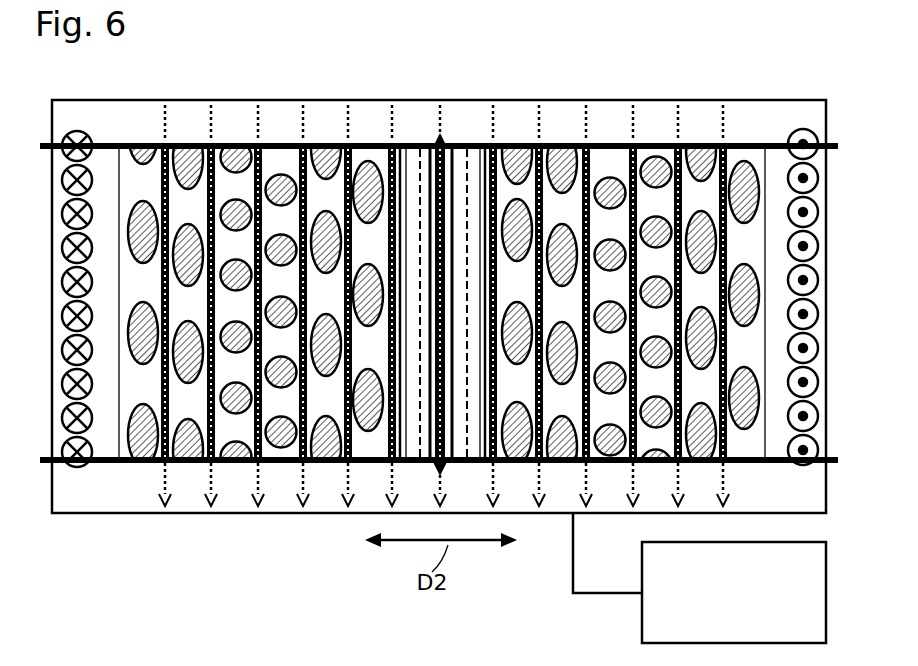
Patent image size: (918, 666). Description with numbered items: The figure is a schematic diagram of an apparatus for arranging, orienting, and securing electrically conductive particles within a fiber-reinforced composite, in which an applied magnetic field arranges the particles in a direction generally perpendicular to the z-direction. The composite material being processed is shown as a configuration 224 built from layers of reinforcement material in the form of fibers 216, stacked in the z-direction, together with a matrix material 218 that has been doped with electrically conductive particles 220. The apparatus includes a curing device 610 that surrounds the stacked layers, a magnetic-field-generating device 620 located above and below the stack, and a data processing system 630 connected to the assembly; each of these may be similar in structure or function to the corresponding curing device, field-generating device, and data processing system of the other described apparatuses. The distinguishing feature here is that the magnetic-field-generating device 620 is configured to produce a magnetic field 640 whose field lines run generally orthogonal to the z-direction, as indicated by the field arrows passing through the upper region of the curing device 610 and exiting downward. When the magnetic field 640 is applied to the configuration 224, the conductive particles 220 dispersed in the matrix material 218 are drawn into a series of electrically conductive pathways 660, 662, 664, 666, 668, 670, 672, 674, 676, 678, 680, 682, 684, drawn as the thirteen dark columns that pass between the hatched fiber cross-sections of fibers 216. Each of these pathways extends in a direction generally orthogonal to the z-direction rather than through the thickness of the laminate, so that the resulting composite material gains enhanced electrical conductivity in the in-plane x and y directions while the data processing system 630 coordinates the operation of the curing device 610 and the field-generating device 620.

The curing device 610 is at (765, 100).
The magnetic-field-generating device 620 is at (78, 468).
The data processing system 630 is at (642, 632).
The magnetic field 640 is at (734, 122).
The configuration 224 is at (118, 162).
The matrix material 218 is at (125, 199).
The electrically conductive particles 220 is at (160, 258).
The fibers 216 is at (185, 365).
The electrically conductive pathway 660 is at (715, 177).
The electrically conductive pathway 662 is at (672, 195).
The electrically conductive pathway 664 is at (620, 165).
The electrically conductive pathway 666 is at (575, 195).
The electrically conductive pathway 668 is at (527, 178).
The electrically conductive pathway 670 is at (485, 167).
The electrically conductive pathway 672 is at (433, 196).
The electrically conductive pathway 674 is at (383, 156).
The electrically conductive pathway 676 is at (337, 193).
The electrically conductive pathway 678 is at (297, 170).
The electrically conductive pathway 680 is at (244, 188).
The electrically conductive pathway 682 is at (205, 207).
The electrically conductive pathway 684 is at (153, 280).